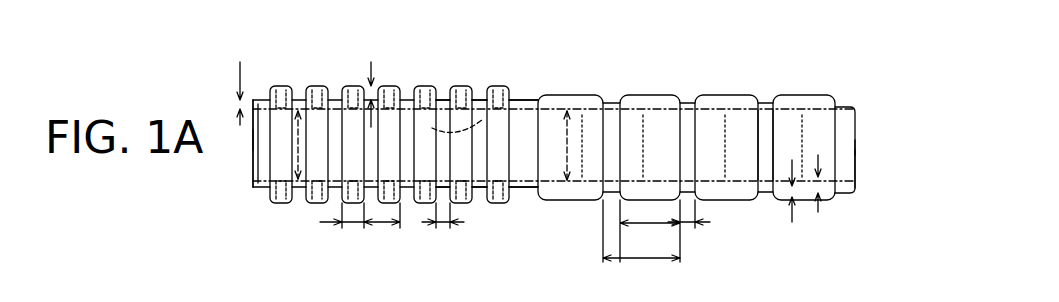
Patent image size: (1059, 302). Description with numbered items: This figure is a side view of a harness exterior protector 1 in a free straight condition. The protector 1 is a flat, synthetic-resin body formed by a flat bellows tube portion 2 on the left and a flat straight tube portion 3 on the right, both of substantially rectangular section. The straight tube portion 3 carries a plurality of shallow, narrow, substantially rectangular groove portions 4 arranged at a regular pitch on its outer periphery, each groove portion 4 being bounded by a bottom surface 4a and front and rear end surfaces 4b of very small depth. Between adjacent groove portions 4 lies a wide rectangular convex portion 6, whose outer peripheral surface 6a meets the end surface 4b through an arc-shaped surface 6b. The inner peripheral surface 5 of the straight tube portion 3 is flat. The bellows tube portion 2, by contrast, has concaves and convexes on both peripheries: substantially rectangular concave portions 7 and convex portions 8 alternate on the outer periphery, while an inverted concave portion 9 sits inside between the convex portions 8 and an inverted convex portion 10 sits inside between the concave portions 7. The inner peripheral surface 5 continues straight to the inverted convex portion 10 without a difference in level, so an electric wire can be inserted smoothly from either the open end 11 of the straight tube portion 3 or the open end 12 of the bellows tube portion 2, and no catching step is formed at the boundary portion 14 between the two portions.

The harness exterior protector 1 is at (653, 23).
The flat bellows tube portion 2 is at (392, 44).
The flat straight tube portion 3 is at (718, 44).
The groove portion 4 is at (610, 103).
The bottom surface 4a is at (781, 135).
The end surface 4b is at (760, 182).
The inner peripheral surface 5 is at (857, 120).
The convex portion 6 is at (582, 95).
The outer peripheral surface 6a is at (802, 120).
The arc-shaped surface 6b is at (760, 133).
The concave portion 7 is at (443, 100).
The convex portion 8 is at (427, 87).
The inverted concave portion 9 is at (480, 100).
The inverted convex portion 10 is at (462, 118).
The open end 11 is at (855, 165).
The open end 12 is at (252, 150).
The boundary portion 14 is at (528, 92).